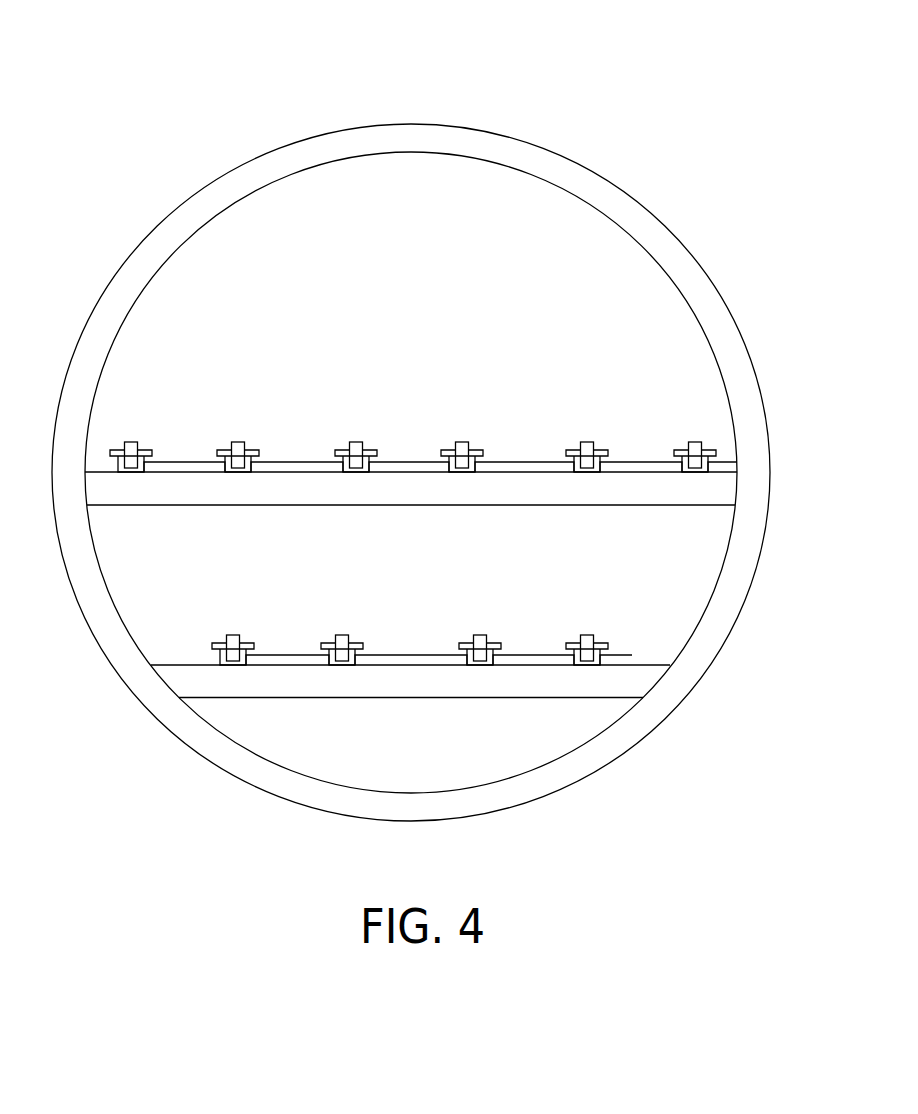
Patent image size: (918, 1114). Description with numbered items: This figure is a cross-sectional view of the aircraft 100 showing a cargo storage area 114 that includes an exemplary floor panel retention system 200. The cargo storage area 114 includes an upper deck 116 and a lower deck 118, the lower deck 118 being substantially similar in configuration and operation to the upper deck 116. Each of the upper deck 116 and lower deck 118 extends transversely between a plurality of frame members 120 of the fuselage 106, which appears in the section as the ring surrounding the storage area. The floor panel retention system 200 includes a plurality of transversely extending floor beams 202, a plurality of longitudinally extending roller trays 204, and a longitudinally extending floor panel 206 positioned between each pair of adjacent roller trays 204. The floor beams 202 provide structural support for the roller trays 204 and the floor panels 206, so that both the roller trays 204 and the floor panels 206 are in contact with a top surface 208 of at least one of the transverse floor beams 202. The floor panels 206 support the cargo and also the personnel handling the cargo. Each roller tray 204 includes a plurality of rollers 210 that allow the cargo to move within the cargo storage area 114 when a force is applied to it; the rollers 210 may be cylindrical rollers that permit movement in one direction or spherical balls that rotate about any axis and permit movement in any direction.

The aircraft 100 is at (172, 118).
The fuselage 106 is at (648, 212).
The cargo storage area 114 is at (427, 357).
The upper deck 116 is at (113, 434).
The lower deck 118 is at (197, 648).
The frame members 120 is at (742, 558).
The floor panel retention system 200 is at (222, 437).
The floor beams 202 is at (403, 492).
The roller trays 204 is at (471, 450).
The floor panel 206 is at (547, 468).
The top surface 208 is at (736, 470).
The rollers 210 is at (238, 441).